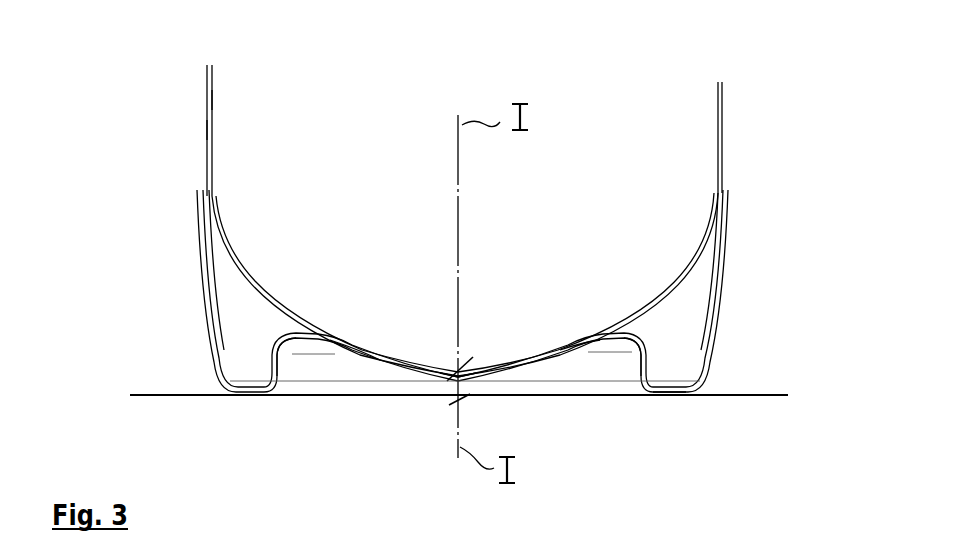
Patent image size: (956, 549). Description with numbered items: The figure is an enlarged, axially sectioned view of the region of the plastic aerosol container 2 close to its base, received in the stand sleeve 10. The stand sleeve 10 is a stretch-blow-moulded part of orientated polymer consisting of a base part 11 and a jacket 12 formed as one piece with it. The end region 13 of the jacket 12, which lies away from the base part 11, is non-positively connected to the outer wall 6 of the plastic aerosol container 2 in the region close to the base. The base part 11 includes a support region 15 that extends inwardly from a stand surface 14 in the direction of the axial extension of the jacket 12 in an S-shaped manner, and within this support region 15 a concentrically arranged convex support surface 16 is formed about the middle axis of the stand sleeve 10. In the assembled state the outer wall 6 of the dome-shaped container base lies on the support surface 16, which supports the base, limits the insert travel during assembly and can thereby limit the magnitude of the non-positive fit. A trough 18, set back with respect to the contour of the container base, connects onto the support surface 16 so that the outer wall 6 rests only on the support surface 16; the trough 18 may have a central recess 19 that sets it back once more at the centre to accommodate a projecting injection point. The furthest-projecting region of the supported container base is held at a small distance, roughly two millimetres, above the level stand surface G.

The plastic aerosol container 2 is at (213, 98).
The outer wall 6 is at (197, 120).
The stand sleeve 10 is at (732, 327).
The base part 11 is at (320, 361).
The jacket 12 is at (728, 247).
The end region 13 is at (728, 191).
The stand surface 14 is at (680, 395).
The support region 15 is at (640, 362).
The support surface 16 is at (598, 350).
The trough 18 is at (378, 366).
The recess 19 is at (470, 382).
The level stand surface G is at (765, 394).